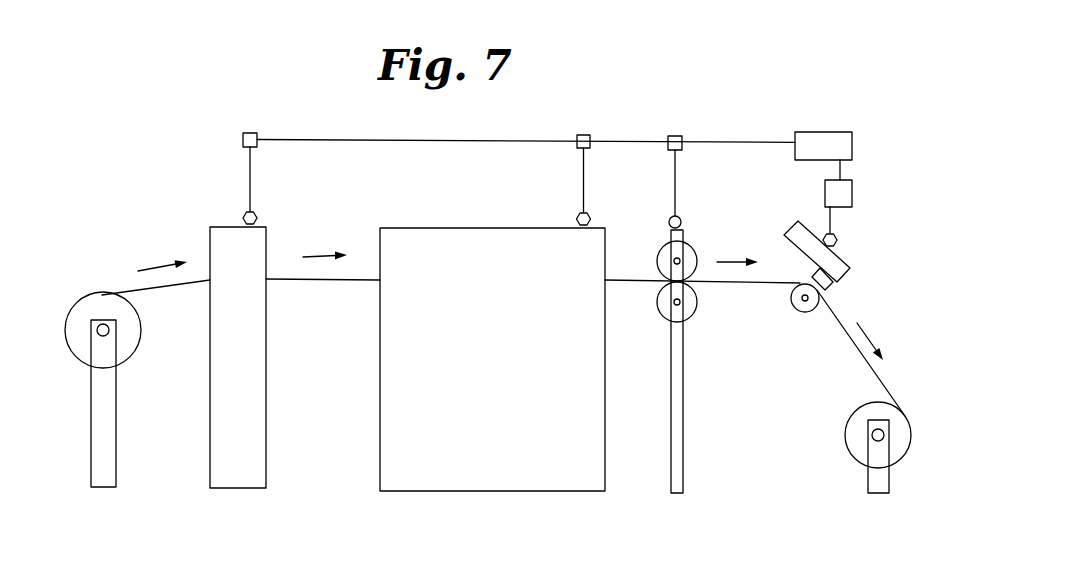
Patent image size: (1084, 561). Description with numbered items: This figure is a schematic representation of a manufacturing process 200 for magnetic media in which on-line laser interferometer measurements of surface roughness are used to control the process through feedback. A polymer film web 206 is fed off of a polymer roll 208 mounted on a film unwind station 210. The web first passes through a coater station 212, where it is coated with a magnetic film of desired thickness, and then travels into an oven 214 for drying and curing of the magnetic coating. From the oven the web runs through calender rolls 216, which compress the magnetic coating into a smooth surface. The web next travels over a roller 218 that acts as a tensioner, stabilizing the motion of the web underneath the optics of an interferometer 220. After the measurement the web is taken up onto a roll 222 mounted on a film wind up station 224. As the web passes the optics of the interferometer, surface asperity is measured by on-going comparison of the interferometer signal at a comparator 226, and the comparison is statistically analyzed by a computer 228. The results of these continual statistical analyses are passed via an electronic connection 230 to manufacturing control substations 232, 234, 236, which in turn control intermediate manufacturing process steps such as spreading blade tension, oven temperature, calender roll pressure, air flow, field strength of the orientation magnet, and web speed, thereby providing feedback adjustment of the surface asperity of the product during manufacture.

The web handling system 200 is at (189, 165).
The polymer film web 206 is at (188, 283).
The polymer roll 208 is at (68, 308).
The film unwind station 210 is at (116, 413).
The coater station 212 is at (266, 357).
The oven 214 is at (380, 465).
The calender rolls 216 is at (695, 307).
The roller 218 is at (808, 312).
The interferometer 220 is at (848, 276).
The take-up roll 222 is at (912, 443).
The film wind up station 224 is at (868, 477).
The comparator 226 is at (852, 200).
The computer 228 is at (852, 142).
The electronic connection 230 is at (765, 142).
The manufacturing control substation 232 is at (675, 136).
The manufacturing control substation 234 is at (584, 135).
The manufacturing control substation 236 is at (250, 133).